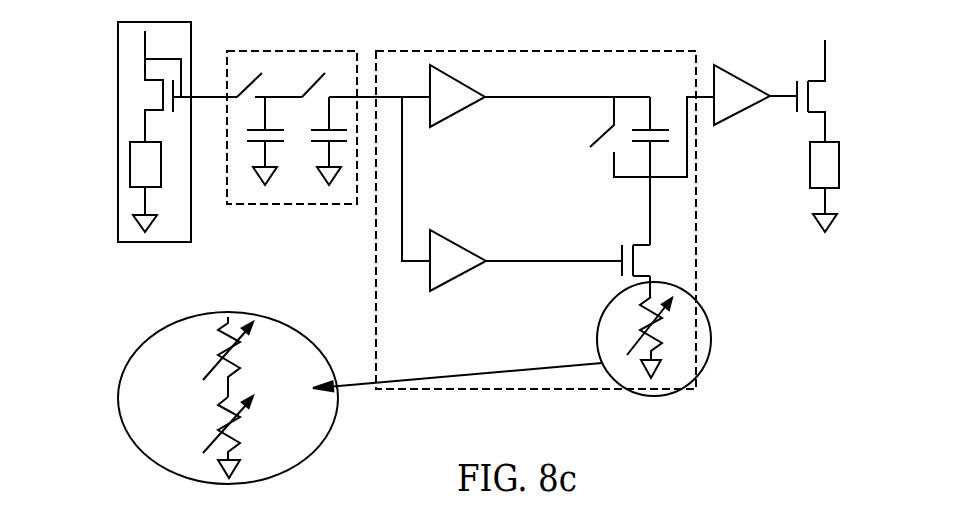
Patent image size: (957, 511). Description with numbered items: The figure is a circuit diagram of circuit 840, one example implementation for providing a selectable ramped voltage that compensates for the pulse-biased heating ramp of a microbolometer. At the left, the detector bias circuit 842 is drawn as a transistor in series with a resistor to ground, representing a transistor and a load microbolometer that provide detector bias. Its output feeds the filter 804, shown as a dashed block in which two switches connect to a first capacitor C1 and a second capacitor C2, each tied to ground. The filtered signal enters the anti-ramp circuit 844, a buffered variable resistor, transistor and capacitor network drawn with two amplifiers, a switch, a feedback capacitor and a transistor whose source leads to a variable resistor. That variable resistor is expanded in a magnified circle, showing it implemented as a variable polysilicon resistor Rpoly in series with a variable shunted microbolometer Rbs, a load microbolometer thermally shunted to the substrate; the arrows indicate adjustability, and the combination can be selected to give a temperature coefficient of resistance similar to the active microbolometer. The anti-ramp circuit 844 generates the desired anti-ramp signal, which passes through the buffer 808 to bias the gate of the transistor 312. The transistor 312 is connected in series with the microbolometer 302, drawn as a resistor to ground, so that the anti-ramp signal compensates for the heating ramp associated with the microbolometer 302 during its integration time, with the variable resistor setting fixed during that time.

The detector bias circuit 842 is at (118, 59).
The filter 804 is at (328, 159).
The anti-ramp circuit 844 is at (376, 296).
The circuit 840 is at (342, 382).
The buffer 808 is at (751, 80).
The transistor 312 is at (814, 116).
The microbolometer 302 is at (810, 176).
The capacitor C1 is at (257, 141).
The capacitor C2 is at (322, 141).
The polysilicon resistor Rpoly is at (255, 357).
The shunted microbolometer Rbs is at (245, 437).